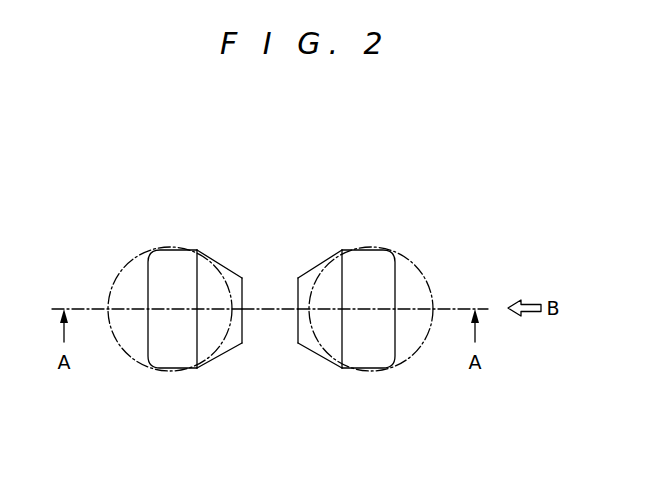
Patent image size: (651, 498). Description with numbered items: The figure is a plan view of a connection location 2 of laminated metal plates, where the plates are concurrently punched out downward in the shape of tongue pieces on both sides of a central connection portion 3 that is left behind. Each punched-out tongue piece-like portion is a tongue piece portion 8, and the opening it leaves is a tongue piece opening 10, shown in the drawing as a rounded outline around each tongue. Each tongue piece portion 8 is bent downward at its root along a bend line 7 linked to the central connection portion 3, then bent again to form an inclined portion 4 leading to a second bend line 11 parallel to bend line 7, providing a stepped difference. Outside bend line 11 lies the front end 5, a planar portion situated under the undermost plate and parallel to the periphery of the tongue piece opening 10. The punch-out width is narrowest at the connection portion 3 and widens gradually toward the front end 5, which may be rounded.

The connection location 2 is at (273, 215).
The central connection portion 3 is at (268, 318).
The inclined portion 4 is at (230, 350).
The front end 5 is at (178, 358).
The bend line 7 is at (247, 293).
The tongue piece portion 8 is at (177, 430).
The tongue piece opening 10 is at (410, 278).
The bend line 11 is at (198, 291).